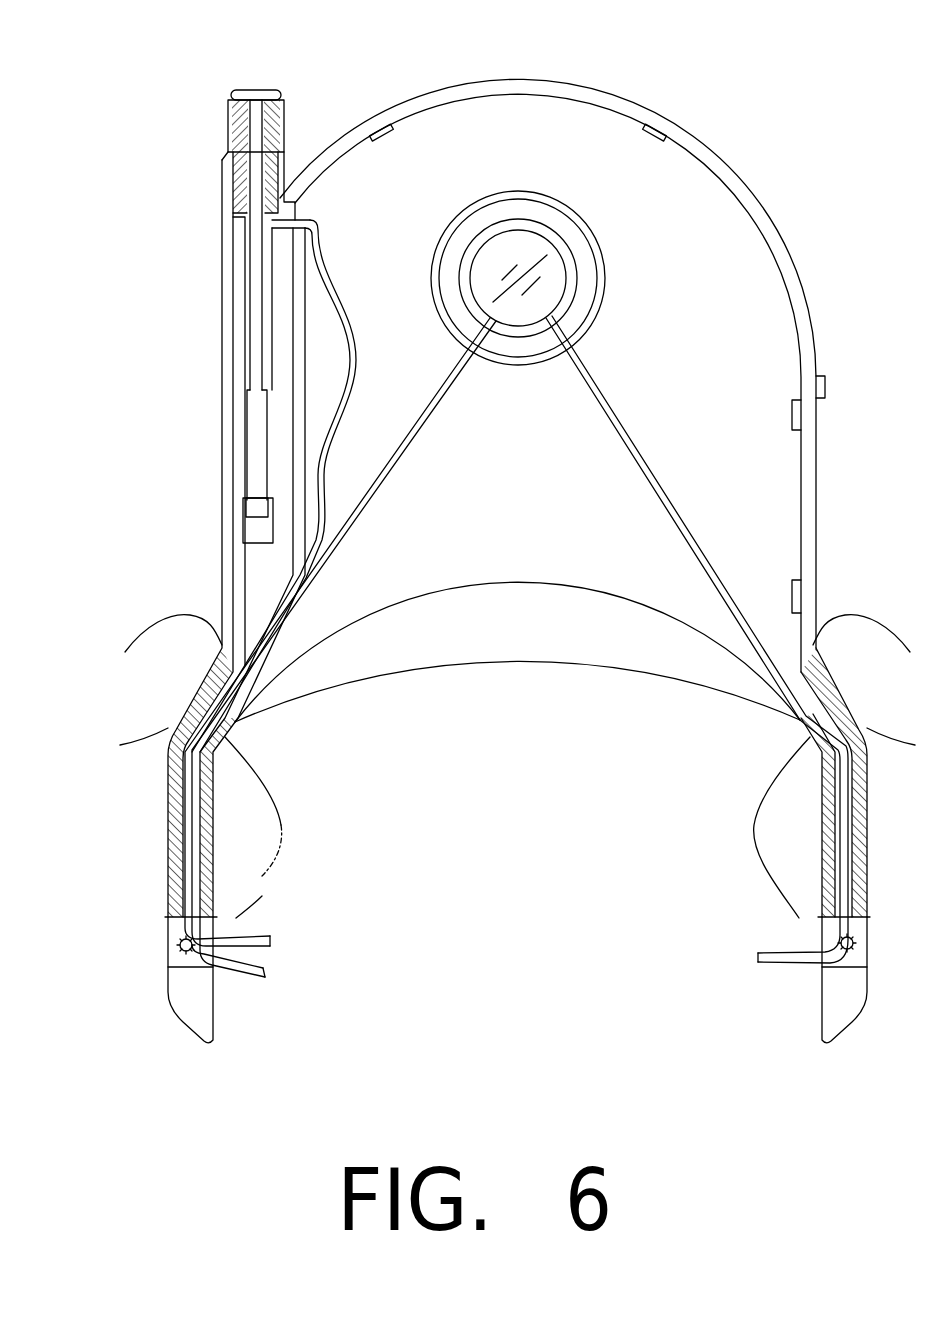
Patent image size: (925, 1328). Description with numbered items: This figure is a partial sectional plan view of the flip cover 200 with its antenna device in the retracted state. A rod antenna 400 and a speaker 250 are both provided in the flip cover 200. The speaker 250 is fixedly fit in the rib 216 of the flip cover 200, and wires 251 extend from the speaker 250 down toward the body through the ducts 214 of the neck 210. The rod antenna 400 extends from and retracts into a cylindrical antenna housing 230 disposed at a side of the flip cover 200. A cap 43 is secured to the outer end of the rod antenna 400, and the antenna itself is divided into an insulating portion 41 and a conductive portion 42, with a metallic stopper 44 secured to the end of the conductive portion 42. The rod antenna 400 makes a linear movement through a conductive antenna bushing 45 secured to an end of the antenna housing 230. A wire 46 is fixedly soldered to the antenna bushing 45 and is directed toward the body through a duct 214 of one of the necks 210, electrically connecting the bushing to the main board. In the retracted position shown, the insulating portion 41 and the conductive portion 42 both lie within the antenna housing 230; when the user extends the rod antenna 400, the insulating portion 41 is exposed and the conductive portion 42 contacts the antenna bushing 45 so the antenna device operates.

The cap 43 is at (256, 95).
The rod antenna 400 is at (218, 155).
The antenna bushing 45 is at (236, 178).
The insulating portion 41 is at (253, 288).
The antenna housing 230 is at (218, 364).
The conductive portion 42 is at (257, 446).
The metallic stopper 44 is at (243, 505).
The wire 46 is at (340, 310).
The rib 216 is at (520, 226).
The speaker 250 is at (555, 283).
The wires 251 is at (412, 440).
The neck 210 is at (180, 742).
The duct 214 is at (215, 803).
The flip cover 200 is at (507, 684).